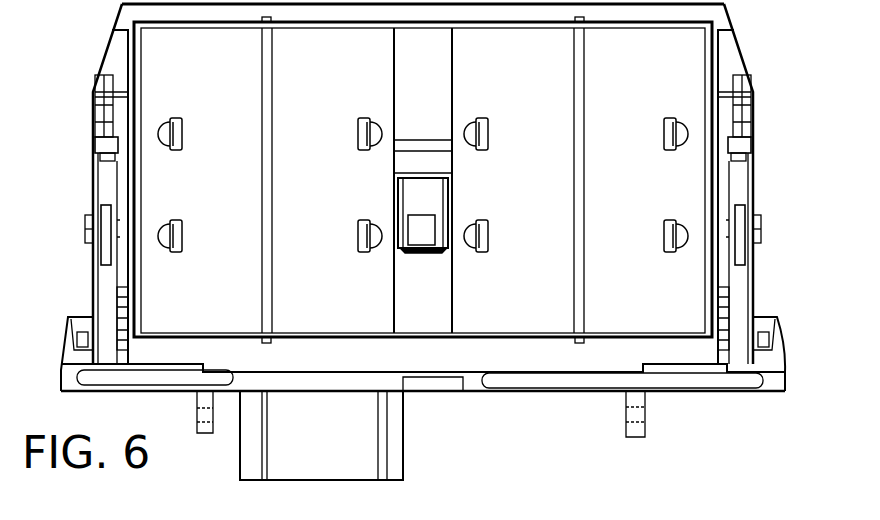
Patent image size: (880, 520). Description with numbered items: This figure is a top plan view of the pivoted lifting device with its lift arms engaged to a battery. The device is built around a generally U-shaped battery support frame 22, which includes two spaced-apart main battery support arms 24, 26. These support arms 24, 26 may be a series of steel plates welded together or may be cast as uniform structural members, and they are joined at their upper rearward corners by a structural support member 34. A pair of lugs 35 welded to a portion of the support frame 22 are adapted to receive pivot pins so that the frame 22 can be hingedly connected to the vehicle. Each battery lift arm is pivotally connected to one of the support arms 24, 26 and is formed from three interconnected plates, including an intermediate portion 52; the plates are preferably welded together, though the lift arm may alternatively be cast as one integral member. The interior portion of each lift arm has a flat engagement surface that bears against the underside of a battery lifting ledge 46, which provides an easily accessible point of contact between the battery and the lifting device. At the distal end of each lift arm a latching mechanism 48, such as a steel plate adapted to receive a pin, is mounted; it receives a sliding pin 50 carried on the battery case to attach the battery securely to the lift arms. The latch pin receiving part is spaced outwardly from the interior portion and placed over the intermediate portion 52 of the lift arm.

The battery support frame 22 is at (511, 392).
The main battery support arm 24 is at (740, 287).
The main battery support arm 26 is at (105, 282).
The structural support member 34 is at (433, 392).
The lug 35 is at (205, 434).
The battery lifting ledge 46 is at (127, 183).
The latching mechanism 48 is at (94, 113).
The sliding pin 50 is at (102, 160).
The intermediate portion 52 is at (108, 183).